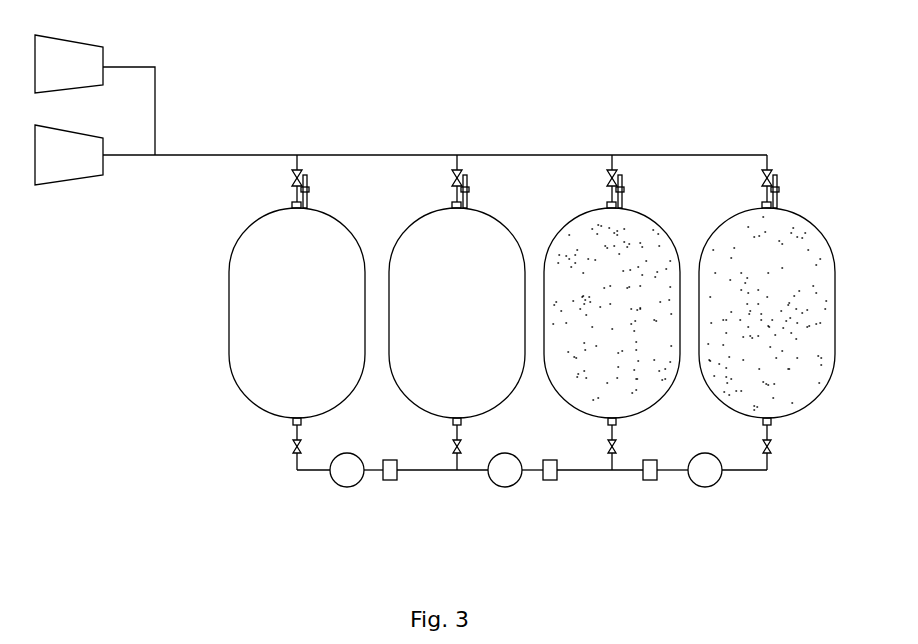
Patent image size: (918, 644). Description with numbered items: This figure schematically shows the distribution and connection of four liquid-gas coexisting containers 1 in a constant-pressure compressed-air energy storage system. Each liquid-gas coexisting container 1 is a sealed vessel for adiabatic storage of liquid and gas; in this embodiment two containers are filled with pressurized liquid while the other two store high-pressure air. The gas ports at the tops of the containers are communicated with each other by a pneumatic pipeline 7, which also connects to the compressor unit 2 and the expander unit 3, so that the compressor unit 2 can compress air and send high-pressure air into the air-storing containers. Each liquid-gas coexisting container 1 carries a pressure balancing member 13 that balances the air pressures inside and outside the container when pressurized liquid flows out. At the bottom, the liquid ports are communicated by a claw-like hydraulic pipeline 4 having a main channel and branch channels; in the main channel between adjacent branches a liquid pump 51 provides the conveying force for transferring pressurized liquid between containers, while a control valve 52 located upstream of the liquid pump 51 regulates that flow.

The liquid-gas coexisting container 1 is at (232, 300).
The compressor unit 2 is at (90, 53).
The expander unit 3 is at (65, 165).
The hydraulic pipeline 4 is at (422, 470).
The pneumatic pipeline 7 is at (388, 155).
The pressure balancing member 13 is at (468, 195).
The liquid pump 51 is at (343, 472).
The control valve 52 is at (385, 478).